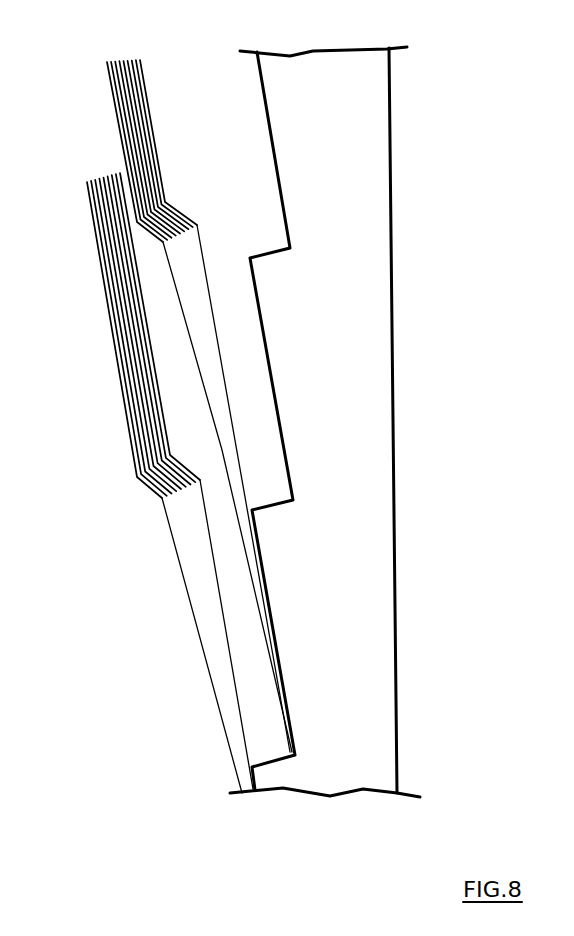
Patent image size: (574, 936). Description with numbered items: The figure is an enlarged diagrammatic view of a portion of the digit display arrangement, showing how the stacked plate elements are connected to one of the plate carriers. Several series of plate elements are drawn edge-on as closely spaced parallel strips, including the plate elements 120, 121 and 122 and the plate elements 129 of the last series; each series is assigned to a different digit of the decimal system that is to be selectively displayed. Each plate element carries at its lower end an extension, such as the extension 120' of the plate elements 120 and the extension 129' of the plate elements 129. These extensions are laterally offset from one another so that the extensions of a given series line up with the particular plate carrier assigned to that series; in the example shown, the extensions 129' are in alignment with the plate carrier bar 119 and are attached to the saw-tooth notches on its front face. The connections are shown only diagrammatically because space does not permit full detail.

The plate carrier 119 is at (343, 420).
The plate elements of the first series 120 is at (143, 252).
The plate elements of the second series 121 is at (134, 60).
The plate elements of the third series 122 is at (130, 62).
The plate elements of the last series 129 is at (99, 253).
The extension of plate element 120 120' is at (243, 507).
The extension of plate element 129 129' is at (227, 517).